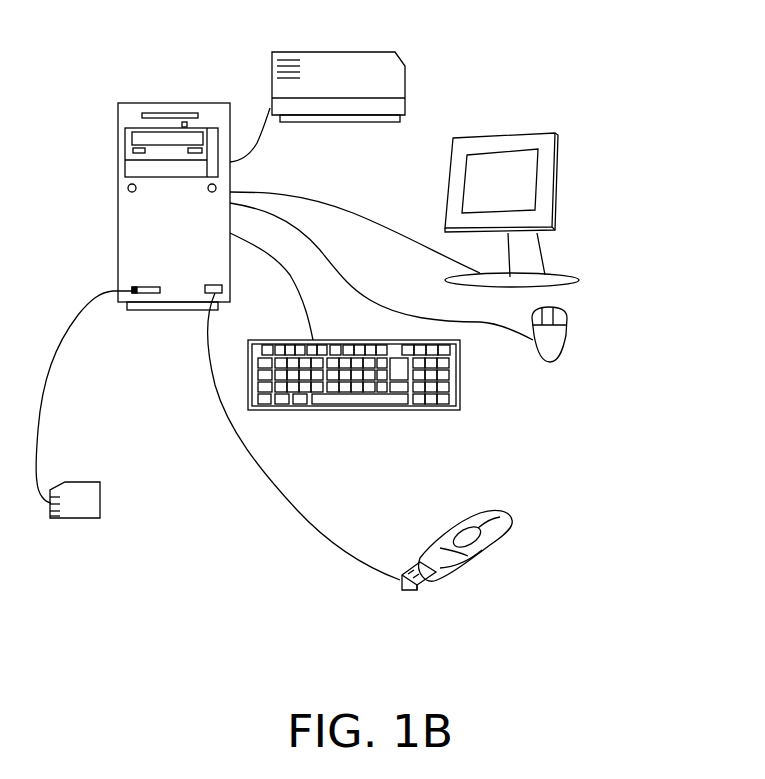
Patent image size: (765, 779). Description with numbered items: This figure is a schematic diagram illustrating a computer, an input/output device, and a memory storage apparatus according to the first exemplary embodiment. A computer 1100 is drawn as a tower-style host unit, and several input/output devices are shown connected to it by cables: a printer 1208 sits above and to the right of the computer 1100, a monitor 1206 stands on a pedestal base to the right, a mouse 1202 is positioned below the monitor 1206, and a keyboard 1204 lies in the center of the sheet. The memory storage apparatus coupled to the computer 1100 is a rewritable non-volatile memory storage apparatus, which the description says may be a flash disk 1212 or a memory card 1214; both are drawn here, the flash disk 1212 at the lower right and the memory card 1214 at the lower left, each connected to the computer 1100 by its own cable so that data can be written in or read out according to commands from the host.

The computer host 1100 is at (173, 102).
The printer 1208 is at (336, 51).
The monitor 1206 is at (512, 133).
The mouse 1202 is at (567, 340).
The keyboard 1204 is at (470, 387).
The flash disk 1212 is at (452, 536).
The memory card 1214 is at (102, 490).